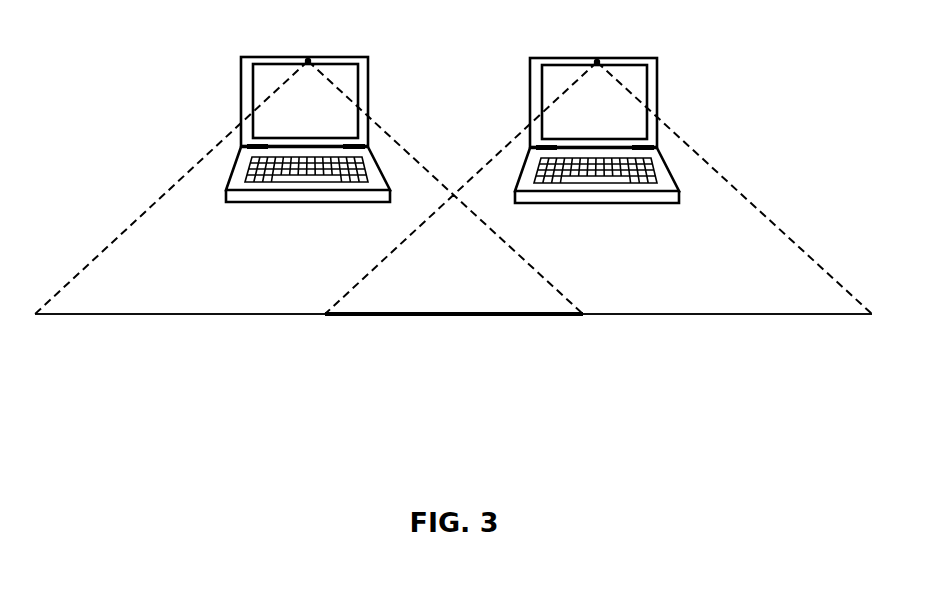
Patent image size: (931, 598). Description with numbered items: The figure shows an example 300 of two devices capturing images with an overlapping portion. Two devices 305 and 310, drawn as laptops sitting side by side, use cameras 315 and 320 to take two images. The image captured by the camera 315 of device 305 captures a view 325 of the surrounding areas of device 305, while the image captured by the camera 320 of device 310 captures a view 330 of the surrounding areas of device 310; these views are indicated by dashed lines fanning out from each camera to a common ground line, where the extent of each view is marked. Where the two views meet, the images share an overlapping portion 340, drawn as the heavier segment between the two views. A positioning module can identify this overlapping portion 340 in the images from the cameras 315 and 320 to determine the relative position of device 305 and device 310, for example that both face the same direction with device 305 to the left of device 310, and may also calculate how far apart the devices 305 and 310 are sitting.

The example of two devices capturing images with an overlapping portion 300 is at (470, 491).
The device 305 is at (262, 55).
The device 310 is at (553, 58).
The camera 315 is at (306, 58).
The camera 320 is at (596, 59).
The view 325 is at (35, 316).
The view 330 is at (872, 316).
The overlapping portion 340 is at (453, 318).